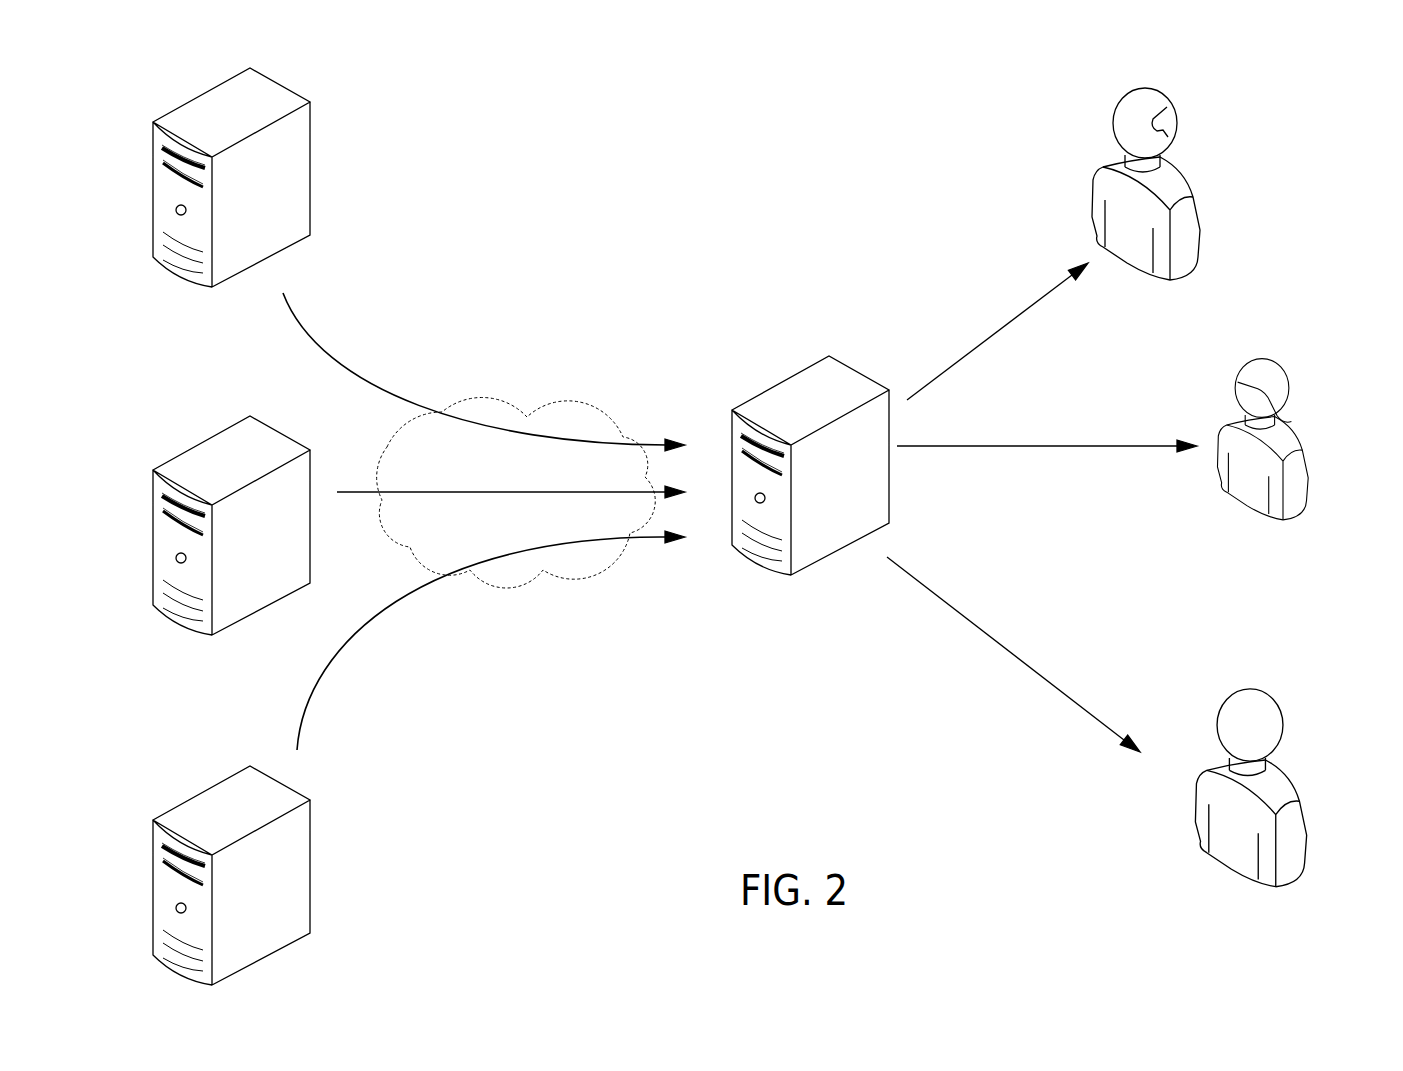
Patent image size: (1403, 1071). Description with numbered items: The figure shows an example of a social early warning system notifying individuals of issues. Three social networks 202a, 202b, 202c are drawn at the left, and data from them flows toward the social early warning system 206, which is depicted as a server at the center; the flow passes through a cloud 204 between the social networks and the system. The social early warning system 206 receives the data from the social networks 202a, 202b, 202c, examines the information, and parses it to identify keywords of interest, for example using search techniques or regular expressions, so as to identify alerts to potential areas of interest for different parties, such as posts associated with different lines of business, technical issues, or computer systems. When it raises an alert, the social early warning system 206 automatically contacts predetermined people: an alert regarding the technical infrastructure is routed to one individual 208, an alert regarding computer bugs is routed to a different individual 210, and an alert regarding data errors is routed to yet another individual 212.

The social network 202a is at (310, 150).
The social network 202b is at (210, 440).
The social network 202c is at (210, 790).
The network 204 is at (478, 395).
The social early warning system 206 is at (777, 385).
The individual 208 is at (1225, 138).
The individual 210 is at (1312, 378).
The individual 212 is at (1315, 724).